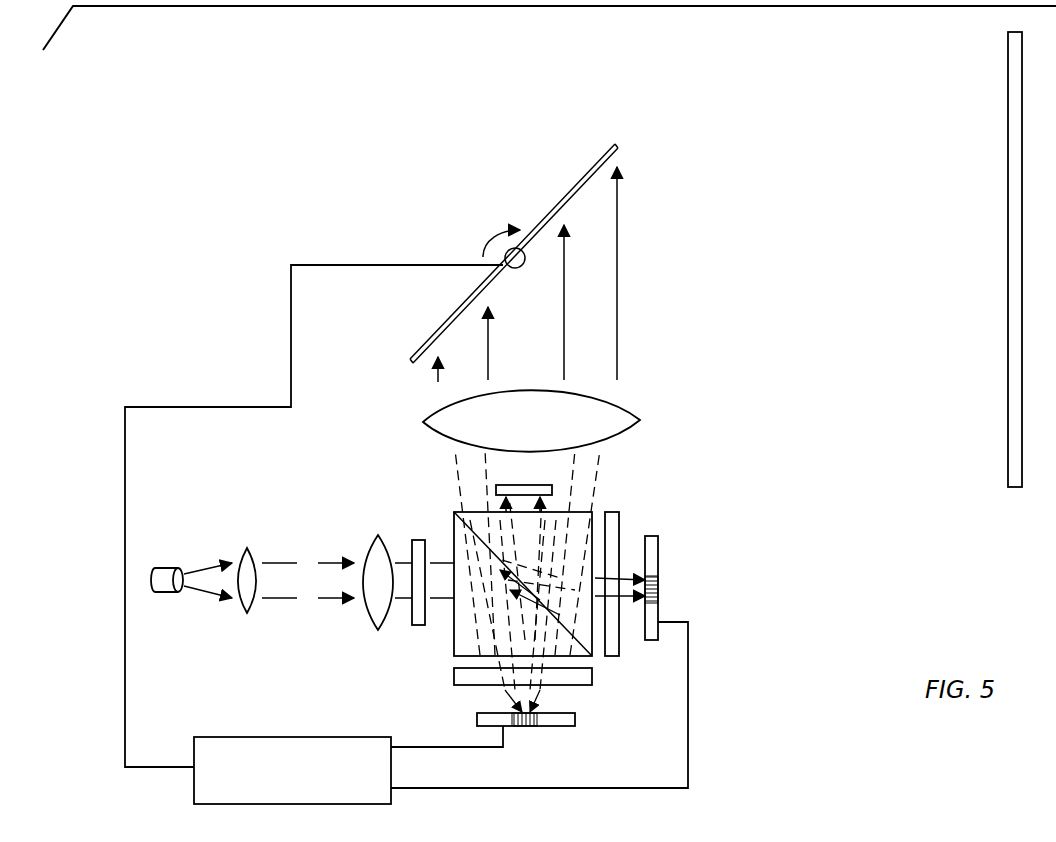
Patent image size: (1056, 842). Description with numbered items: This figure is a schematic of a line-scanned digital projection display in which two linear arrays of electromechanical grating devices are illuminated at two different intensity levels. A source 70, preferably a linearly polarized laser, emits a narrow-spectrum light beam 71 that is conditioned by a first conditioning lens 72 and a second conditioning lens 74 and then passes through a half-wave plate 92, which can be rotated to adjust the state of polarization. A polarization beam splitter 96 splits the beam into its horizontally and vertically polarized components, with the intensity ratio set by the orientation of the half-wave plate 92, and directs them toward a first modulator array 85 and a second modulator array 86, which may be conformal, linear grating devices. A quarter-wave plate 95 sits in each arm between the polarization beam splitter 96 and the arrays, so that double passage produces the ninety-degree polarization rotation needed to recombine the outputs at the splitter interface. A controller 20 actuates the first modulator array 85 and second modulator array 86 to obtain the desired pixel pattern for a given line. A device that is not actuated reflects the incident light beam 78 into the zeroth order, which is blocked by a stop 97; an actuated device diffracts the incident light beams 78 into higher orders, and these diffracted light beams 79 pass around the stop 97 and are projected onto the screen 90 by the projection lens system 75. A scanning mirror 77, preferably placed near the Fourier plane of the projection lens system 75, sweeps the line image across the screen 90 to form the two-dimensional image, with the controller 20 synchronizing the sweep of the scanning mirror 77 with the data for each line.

The controller 20 is at (275, 737).
The source 70 is at (168, 590).
The light beam 71 is at (211, 564).
The first conditioning lens 72 is at (247, 548).
The second conditioning lens 74 is at (372, 550).
The projection lens system 75 is at (633, 405).
The scanning mirror 77 is at (563, 202).
The incident light beam 78 is at (518, 711).
The diffracted light beams 79 is at (617, 258).
The first modulator array 85 is at (660, 560).
The second modulator array 86 is at (560, 727).
The screen 90 is at (1008, 183).
The half-wave plate 92 is at (425, 613).
The quarter-wave plate 95 is at (622, 525).
The polarization beam splitter 96 is at (597, 512).
The stop 97 is at (535, 485).